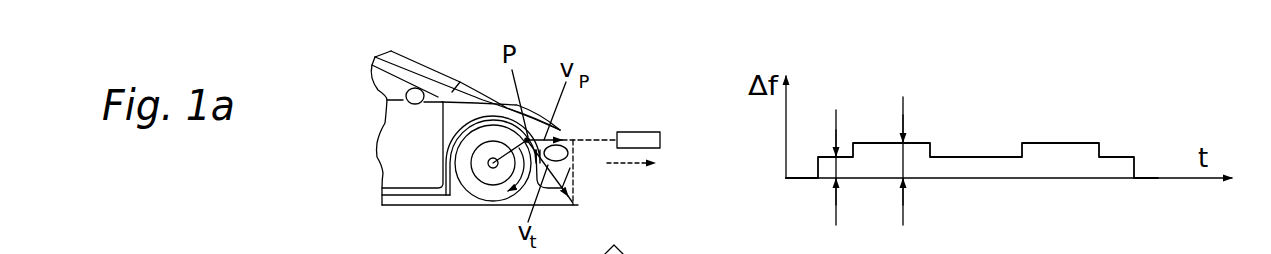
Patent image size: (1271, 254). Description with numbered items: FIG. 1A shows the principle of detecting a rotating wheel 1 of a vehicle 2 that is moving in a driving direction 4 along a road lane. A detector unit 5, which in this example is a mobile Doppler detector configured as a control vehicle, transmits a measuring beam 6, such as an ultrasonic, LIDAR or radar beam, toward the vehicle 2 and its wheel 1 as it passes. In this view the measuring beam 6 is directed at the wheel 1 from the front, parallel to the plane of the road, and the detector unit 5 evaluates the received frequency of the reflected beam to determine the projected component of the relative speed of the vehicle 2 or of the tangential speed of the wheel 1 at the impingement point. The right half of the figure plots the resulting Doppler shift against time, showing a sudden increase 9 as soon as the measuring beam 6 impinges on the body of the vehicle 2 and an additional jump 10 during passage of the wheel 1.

The wheel 1 is at (483, 190).
The vehicle 2 is at (412, 148).
The driving direction 4 is at (621, 168).
The detector unit 5 is at (641, 132).
The measuring beam 6 is at (588, 138).
The sudden increase 9 is at (836, 168).
The additional jump 10 is at (903, 162).